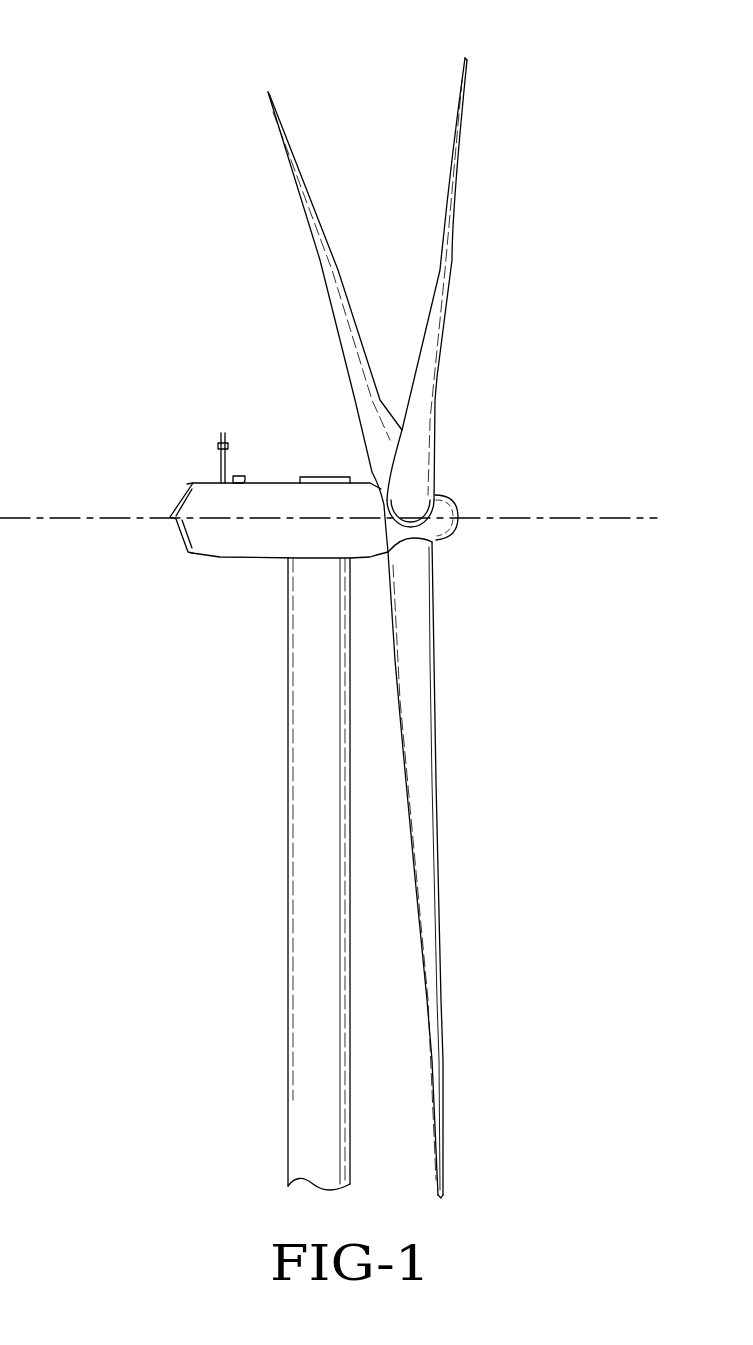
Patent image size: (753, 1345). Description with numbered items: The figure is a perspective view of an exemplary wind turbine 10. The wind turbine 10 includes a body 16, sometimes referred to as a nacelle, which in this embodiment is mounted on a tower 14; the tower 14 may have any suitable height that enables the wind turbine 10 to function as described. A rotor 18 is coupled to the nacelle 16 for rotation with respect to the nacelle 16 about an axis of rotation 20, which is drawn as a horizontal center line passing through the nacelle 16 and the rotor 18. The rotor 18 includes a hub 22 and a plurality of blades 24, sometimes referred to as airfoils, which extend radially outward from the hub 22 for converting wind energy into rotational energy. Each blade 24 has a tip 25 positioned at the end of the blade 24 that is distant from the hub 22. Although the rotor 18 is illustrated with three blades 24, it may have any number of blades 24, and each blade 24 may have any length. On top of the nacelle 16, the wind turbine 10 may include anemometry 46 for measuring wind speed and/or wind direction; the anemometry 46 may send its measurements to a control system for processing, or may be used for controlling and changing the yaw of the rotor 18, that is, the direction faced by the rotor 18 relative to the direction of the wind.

The wind turbine 10 is at (86, 258).
The tower 14 is at (288, 712).
The body (nacelle) 16 is at (204, 559).
The rotor 18 is at (452, 585).
The axis of rotation 20 is at (575, 518).
The hub 22 is at (450, 535).
The blade 24 is at (305, 208).
The tip 25 is at (268, 92).
The anemometry 46 is at (218, 445).